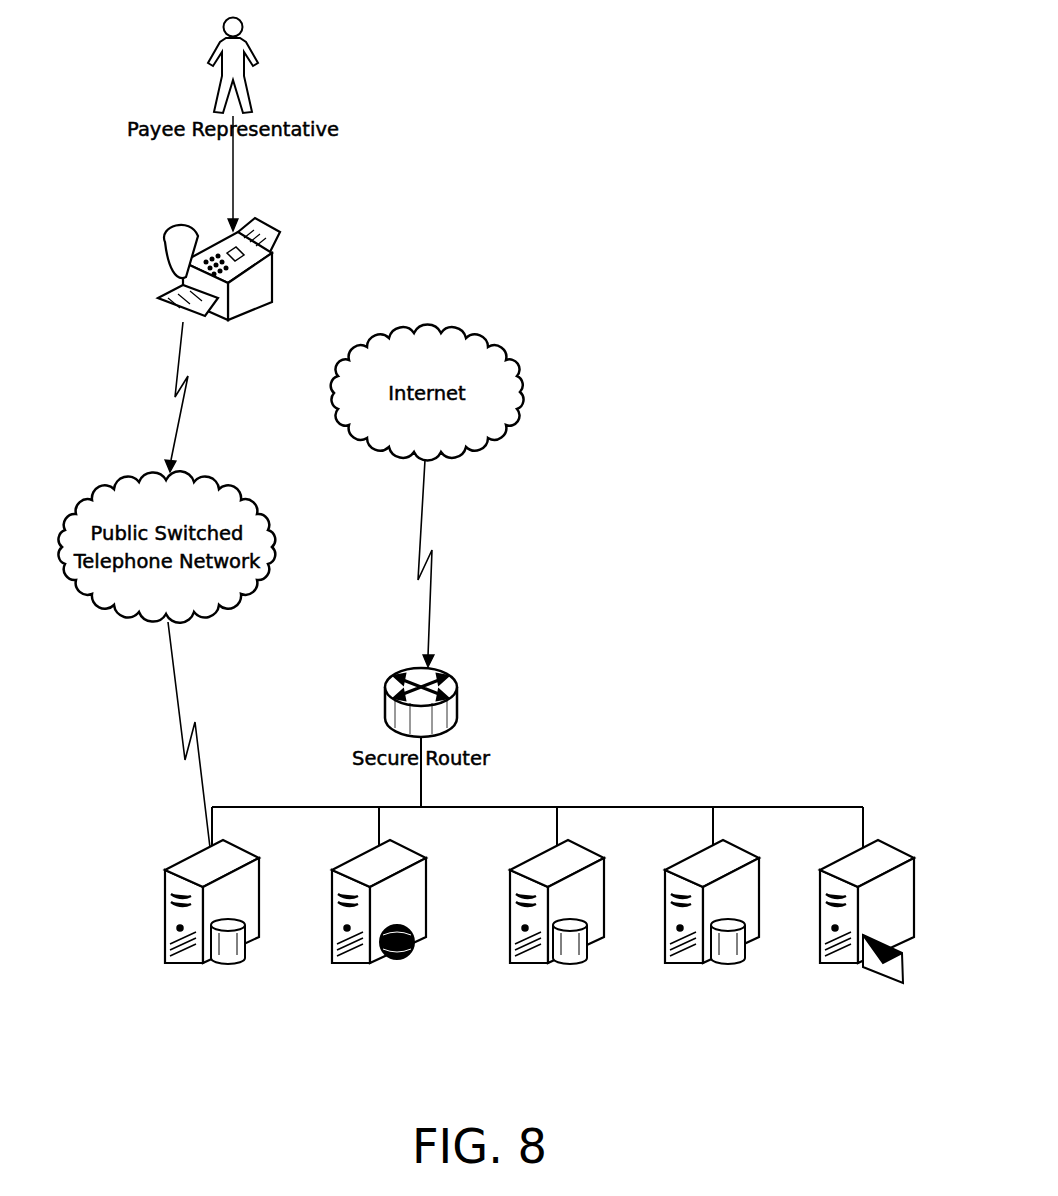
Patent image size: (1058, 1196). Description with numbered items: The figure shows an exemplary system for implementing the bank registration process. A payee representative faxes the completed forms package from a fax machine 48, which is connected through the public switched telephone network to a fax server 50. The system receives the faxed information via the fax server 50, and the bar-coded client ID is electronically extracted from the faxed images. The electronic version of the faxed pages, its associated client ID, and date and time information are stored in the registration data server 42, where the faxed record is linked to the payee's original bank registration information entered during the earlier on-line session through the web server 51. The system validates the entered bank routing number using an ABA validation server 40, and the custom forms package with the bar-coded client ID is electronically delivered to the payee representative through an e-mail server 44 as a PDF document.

The fax machine 48 is at (280, 277).
The fax server 50 is at (154, 943).
The web server 51 is at (428, 865).
The registration data server 42 is at (587, 851).
The ABA validation server 40 is at (743, 850).
The e-mail server 44 is at (895, 846).